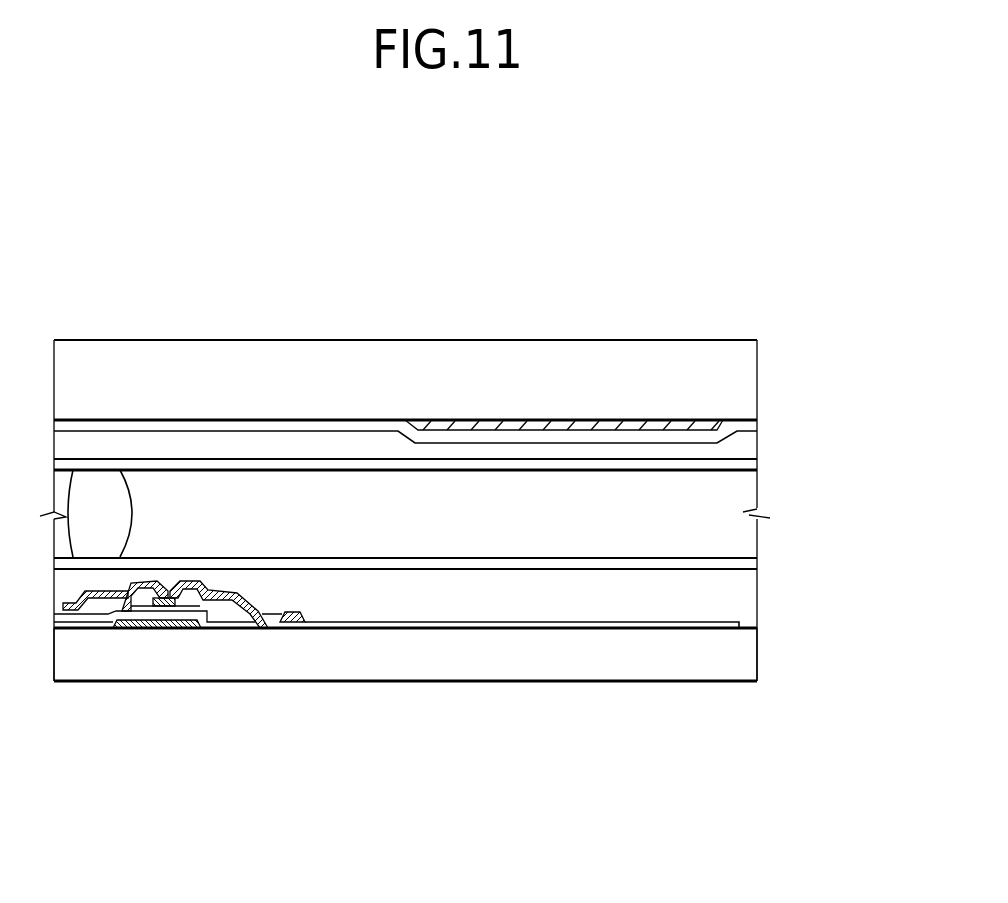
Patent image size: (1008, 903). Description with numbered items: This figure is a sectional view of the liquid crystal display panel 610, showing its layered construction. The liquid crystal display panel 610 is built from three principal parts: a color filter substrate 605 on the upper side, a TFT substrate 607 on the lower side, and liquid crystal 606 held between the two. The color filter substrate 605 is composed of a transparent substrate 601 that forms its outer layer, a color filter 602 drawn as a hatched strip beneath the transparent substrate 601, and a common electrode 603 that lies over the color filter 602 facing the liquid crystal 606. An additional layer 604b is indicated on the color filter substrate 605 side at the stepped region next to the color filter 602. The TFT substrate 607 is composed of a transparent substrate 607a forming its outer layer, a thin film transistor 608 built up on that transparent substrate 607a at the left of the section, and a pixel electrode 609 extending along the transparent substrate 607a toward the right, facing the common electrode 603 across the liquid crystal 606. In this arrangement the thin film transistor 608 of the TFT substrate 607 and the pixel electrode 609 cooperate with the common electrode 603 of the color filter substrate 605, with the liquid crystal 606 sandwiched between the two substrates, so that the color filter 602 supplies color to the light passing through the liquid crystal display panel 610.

The transparent substrate 601 is at (686, 355).
The color filter 602 is at (588, 425).
The common electrode 603 is at (292, 441).
The overcoat layer 604b is at (752, 424).
The color filter substrate 605 is at (763, 385).
The liquid crystal 606 is at (768, 505).
The TFT substrate 607 is at (768, 618).
The transparent substrate 607a is at (672, 660).
The thin film transistor 608 is at (167, 640).
The pixel electrode 609 is at (565, 625).
The liquid crystal display panel 610 is at (469, 288).